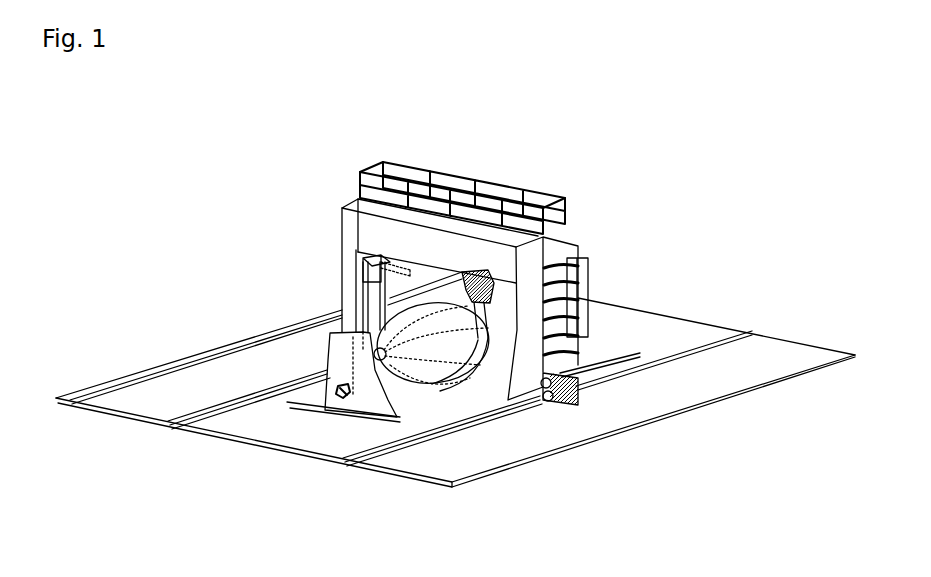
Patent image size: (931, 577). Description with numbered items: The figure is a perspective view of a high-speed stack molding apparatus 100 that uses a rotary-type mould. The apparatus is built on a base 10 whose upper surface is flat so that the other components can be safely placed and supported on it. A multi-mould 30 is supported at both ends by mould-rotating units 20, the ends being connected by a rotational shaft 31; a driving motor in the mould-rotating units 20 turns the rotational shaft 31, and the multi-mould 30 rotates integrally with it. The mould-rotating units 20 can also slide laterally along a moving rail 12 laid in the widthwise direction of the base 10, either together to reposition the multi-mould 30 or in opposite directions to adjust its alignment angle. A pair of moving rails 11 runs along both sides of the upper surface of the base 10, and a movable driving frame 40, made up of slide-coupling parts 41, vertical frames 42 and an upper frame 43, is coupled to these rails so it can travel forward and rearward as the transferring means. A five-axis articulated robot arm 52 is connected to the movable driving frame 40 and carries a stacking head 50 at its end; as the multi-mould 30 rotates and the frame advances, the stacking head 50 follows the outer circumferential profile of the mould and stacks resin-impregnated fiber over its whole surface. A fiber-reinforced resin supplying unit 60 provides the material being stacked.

The high-speed stack molding apparatus 100 is at (212, 152).
The base 10 is at (187, 352).
The moving rail 11 is at (163, 421).
The moving rail 12 is at (305, 404).
The mould-rotating unit 20 is at (338, 418).
The multi-mould 30 is at (441, 401).
The rotational shaft 31 is at (340, 322).
The movable driving frame 40 is at (573, 227).
The slide-coupling part 41 is at (540, 400).
The vertical frame 42 is at (592, 290).
The upper frame 43 is at (430, 243).
The stacking head 50 is at (487, 345).
The robot arm 52 is at (505, 272).
The fiber-reinforced resin supplying unit 60 is at (593, 399).